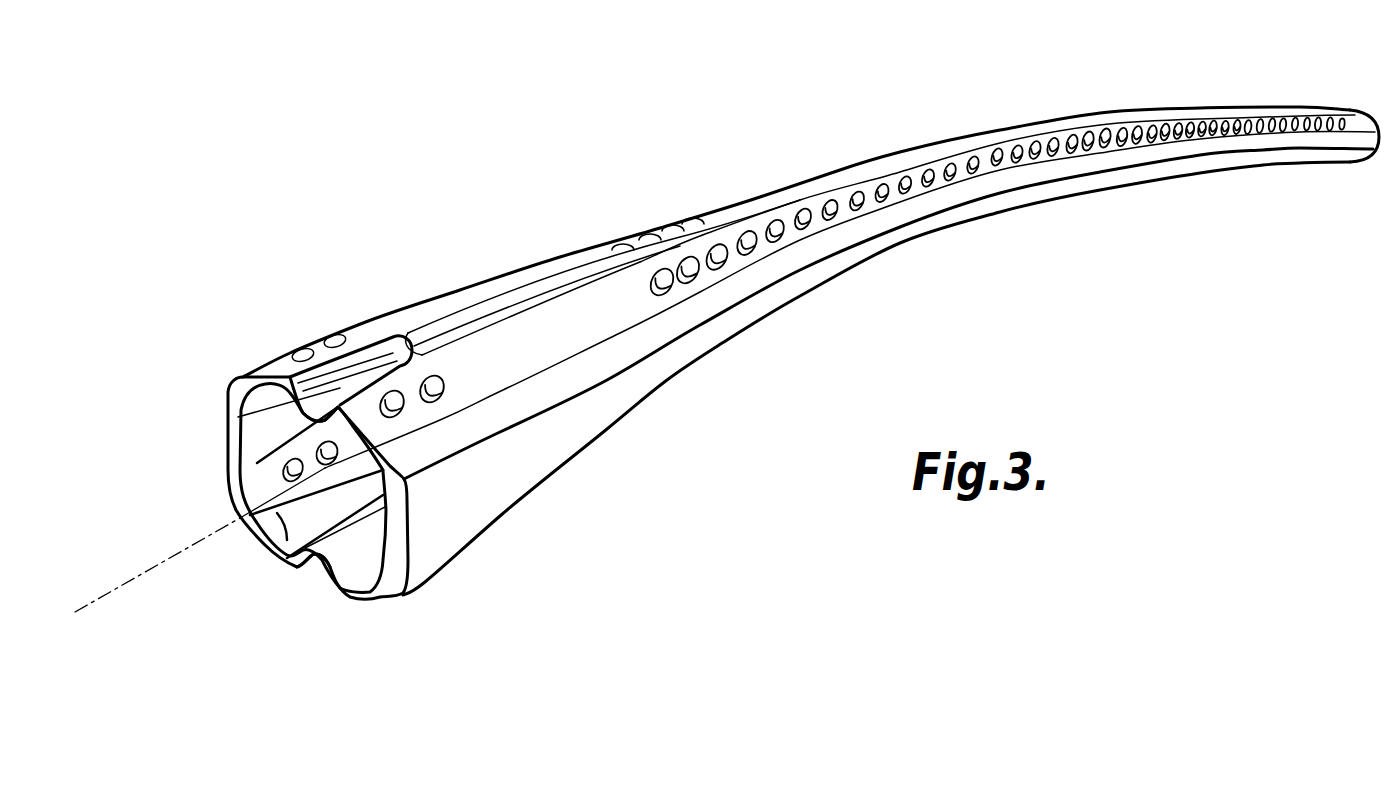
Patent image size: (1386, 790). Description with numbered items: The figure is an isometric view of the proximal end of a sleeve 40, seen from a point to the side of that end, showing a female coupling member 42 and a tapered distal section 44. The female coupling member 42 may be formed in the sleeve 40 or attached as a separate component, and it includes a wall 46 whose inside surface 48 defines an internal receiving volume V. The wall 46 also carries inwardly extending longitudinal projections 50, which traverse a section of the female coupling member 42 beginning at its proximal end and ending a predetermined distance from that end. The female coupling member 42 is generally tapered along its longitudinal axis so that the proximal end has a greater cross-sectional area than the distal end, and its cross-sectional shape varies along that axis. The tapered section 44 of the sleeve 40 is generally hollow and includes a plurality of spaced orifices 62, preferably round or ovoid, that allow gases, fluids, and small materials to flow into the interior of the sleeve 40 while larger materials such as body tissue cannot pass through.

The sleeve 40 is at (467, 173).
The female coupling member 42 is at (505, 474).
The tapered distal section 44 is at (993, 228).
The wall 46 is at (240, 450).
The inside surface 48 is at (283, 528).
The inwardly extending longitudinal projections 50 is at (315, 410).
The spaced orifices 62 is at (700, 272).
The internal receiving volume V is at (272, 411).